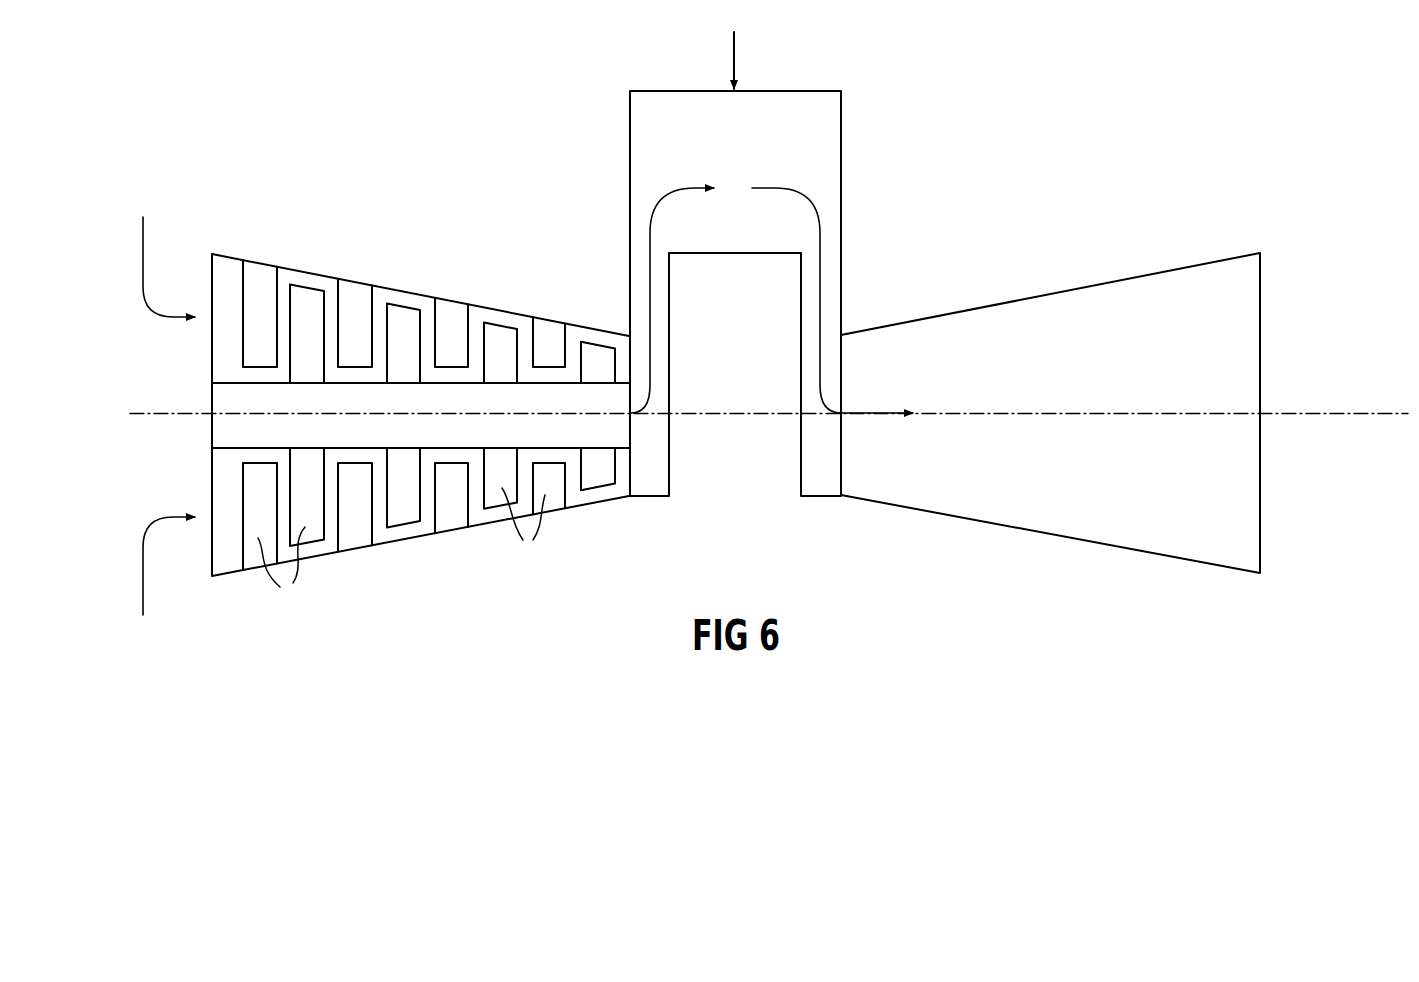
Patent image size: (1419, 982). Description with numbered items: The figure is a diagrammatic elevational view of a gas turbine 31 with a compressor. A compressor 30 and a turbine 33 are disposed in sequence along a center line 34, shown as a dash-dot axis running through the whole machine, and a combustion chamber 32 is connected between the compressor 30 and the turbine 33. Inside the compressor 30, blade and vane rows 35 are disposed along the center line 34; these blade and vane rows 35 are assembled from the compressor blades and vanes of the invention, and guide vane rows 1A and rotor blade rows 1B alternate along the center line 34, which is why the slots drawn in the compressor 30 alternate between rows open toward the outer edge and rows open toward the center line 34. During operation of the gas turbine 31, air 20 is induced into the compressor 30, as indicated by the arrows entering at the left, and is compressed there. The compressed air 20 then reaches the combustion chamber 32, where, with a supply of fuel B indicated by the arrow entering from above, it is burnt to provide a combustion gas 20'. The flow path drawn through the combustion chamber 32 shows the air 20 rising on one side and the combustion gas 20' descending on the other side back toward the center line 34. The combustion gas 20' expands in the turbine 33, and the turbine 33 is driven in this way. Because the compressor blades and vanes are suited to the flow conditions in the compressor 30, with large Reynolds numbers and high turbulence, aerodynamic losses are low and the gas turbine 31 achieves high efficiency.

The air 20 is at (422, 419).
The combustion gas 20' is at (832, 300).
The guide vane rows 1A is at (258, 295).
The rotor blade rows 1B is at (406, 325).
The compressor 30 is at (399, 543).
The gas turbine 31 is at (995, 123).
The combustion chamber 32 is at (684, 118).
The turbine 33 is at (1052, 490).
The center line 34 is at (230, 432).
The blade and vane rows 35 is at (401, 555).
The fuel B is at (746, 59).